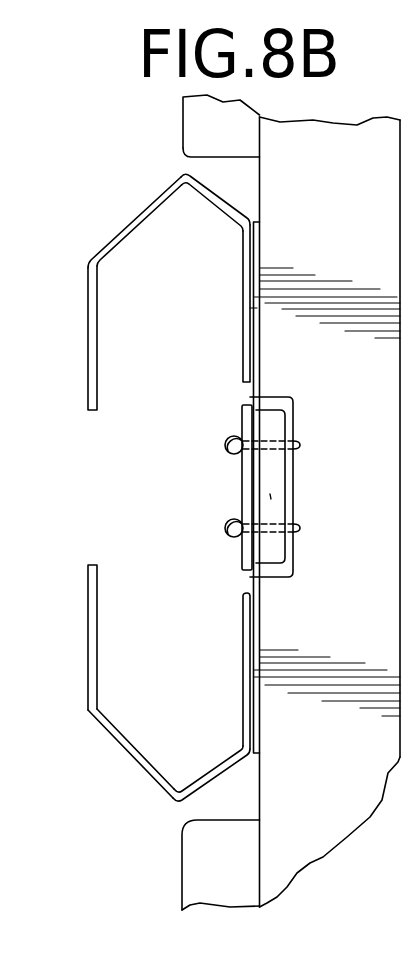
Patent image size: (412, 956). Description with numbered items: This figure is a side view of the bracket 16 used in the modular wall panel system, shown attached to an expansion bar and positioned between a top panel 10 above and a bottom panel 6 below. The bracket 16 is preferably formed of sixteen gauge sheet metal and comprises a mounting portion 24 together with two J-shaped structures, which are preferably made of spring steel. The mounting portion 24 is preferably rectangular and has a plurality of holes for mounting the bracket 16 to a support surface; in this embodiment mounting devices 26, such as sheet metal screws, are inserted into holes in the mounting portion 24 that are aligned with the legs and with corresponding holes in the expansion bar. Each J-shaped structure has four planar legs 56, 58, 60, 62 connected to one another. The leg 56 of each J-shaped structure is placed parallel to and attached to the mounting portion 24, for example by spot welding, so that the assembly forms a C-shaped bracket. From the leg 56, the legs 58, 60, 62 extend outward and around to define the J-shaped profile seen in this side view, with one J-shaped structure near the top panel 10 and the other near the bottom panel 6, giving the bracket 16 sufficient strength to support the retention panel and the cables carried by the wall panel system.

The bottom panel 6 is at (182, 867).
The top panel 10 is at (196, 133).
The bracket 16 is at (160, 487).
The mounting portion 24 is at (256, 256).
The mounting device 26 is at (227, 523).
The leg 56 is at (243, 348).
The leg 58 is at (208, 194).
The leg 60 is at (152, 218).
The leg 62 is at (98, 387).